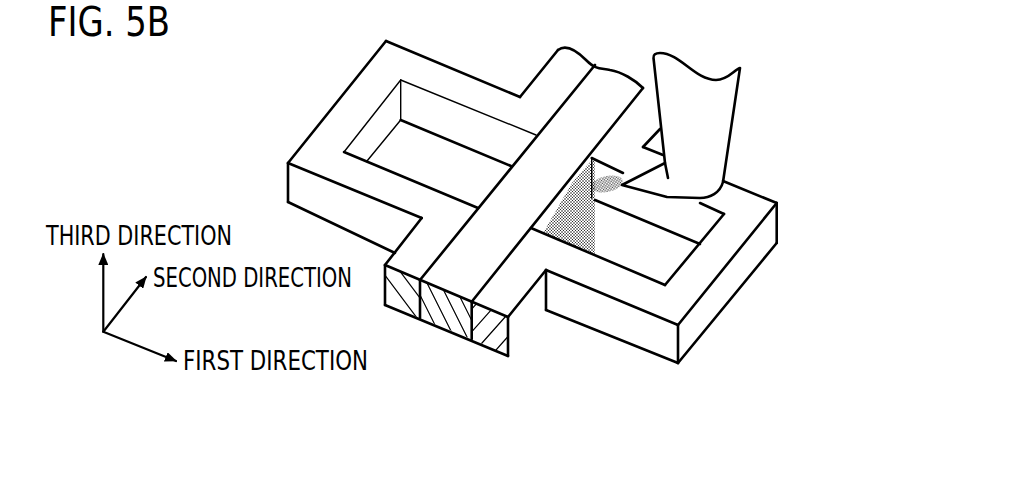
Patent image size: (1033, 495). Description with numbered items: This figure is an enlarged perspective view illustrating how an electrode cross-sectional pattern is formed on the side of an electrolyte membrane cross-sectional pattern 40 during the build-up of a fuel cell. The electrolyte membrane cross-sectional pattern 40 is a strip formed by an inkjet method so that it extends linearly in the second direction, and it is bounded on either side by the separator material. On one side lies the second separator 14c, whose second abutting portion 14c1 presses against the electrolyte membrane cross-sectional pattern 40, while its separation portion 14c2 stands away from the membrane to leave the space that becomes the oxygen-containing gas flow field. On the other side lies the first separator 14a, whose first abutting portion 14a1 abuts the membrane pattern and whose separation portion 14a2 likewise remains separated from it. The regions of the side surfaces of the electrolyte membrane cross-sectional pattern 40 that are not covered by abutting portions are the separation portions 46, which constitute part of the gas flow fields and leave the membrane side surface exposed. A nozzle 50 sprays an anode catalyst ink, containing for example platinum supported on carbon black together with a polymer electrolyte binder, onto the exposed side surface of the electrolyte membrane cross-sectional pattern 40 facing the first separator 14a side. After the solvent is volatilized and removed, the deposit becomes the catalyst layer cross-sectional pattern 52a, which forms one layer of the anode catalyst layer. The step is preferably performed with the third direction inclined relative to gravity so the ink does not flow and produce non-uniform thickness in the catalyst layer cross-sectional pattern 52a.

The second separator 14c is at (443, 62).
The second abutting portion 14c1 is at (552, 70).
The separation portion 14c2 is at (342, 118).
The first separator 14a is at (758, 198).
The first abutting portion 14a1 is at (643, 119).
The separation portion 14a2 is at (707, 268).
The electrolyte membrane cross-sectional pattern 40 is at (608, 87).
The separation portion 46 is at (459, 180).
The nozzle 50 is at (694, 88).
The catalyst layer cross-sectional pattern 52a is at (573, 222).